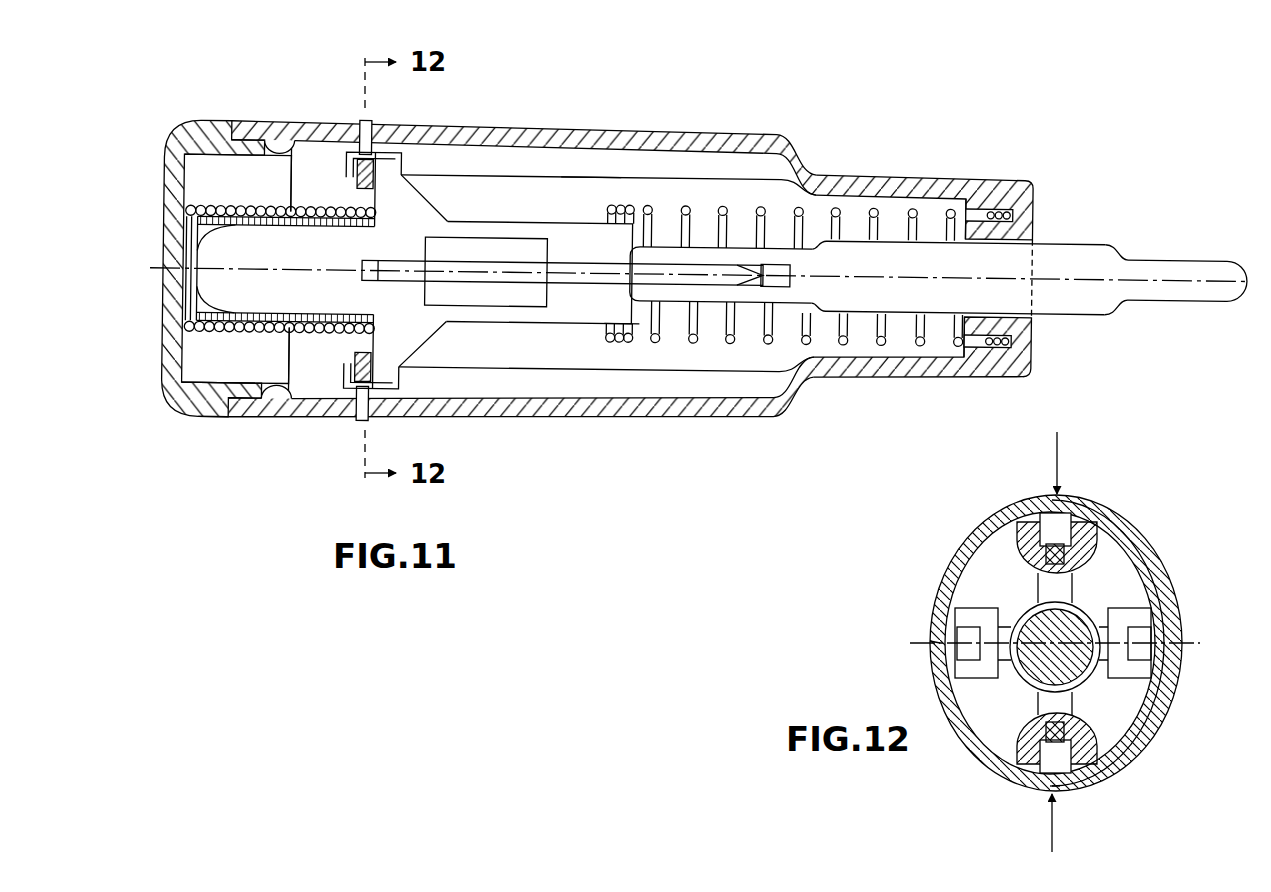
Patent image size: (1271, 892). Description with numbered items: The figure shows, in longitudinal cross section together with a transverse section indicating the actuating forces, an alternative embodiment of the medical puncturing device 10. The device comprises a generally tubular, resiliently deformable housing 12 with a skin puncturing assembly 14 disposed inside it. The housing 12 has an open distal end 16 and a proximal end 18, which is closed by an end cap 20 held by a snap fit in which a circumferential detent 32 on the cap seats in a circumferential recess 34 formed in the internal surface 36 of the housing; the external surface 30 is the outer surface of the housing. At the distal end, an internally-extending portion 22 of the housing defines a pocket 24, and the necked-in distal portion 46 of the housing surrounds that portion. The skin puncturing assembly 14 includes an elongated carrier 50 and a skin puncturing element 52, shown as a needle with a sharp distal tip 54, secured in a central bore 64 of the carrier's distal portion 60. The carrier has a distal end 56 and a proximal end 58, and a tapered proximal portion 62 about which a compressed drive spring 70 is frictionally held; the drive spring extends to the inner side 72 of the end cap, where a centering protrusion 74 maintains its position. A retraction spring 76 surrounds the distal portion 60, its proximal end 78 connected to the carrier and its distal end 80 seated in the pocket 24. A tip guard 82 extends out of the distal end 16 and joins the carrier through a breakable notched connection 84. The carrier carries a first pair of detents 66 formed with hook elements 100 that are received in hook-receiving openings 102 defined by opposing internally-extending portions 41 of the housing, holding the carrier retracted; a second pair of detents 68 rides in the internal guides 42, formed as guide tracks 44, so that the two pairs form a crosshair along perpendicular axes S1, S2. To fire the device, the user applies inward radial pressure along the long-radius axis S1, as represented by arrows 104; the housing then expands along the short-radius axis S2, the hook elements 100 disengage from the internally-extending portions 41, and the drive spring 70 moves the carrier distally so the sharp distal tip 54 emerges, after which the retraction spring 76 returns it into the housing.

In FIG. 11, the puncturing device 10 is at (252, 72).
In FIG. 11, the housing 12 is at (700, 143).
In FIG. 11, the skin puncturing assembly 14 is at (585, 186).
In FIG. 11, the distal end 16 is at (1036, 180).
In FIG. 11, the proximal end 18 is at (228, 118).
In FIG. 11, the end cap 20 is at (175, 145).
In FIG. 11, the internally-extending portion 22 is at (978, 352).
In FIG. 11, the pocket 24 is at (975, 208).
In FIG. 11, the external surface 30 is at (768, 130).
In FIG. 12, the external surface 30 is at (1163, 535).
In FIG. 11, the circumferential detent 32 is at (292, 418).
In FIG. 11, the circumferential recess 34 is at (252, 416).
In FIG. 11, the internal surface 36 is at (318, 134).
In FIG. 11, the internally-extending portions 41 is at (358, 172).
In FIG. 12, the internally-extending portions 41 is at (1090, 548).
In FIG. 12, the internal guides 42 is at (982, 603).
In FIG. 11, the guide tracks 44 is at (700, 162).
In FIG. 12, the guide tracks 44 is at (960, 628).
In FIG. 11, the distal portion 46 is at (850, 172).
In FIG. 11, the carrier 50 is at (520, 235).
In FIG. 11, the skin puncturing element 52 is at (545, 282).
In FIG. 11, the sharp distal tip 54 is at (770, 282).
In FIG. 11, the distal end 56 is at (713, 200).
In FIG. 11, the proximal end 58 is at (214, 252).
In FIG. 11, the distal portion 60 is at (580, 232).
In FIG. 11, the proximal portion 62 is at (256, 307).
In FIG. 11, the central bore 64 is at (374, 262).
In FIG. 11, the first pair of detents 66 is at (408, 175).
In FIG. 12, the first pair of detents 66 is at (1072, 590).
In FIG. 12, the second pair of detents 68 is at (1000, 660).
In FIG. 11, the drive spring 70 is at (185, 340).
In FIG. 12, the drive spring 70 is at (1040, 617).
In FIG. 11, the inner side 72 is at (190, 370).
In FIG. 11, the centering protrusion 74 is at (185, 240).
In FIG. 11, the retraction spring 76 is at (846, 345).
In FIG. 11, the proximal end 78 is at (612, 334).
In FIG. 11, the distal end 80 is at (1034, 356).
In FIG. 11, the tip guard 82 is at (1112, 310).
In FIG. 11, the notched connection 84 is at (640, 302).
In FIG. 11, the hook elements 100 is at (348, 160).
In FIG. 12, the hook elements 100 is at (1040, 535).
In FIG. 11, the hook-receiving openings 102 is at (375, 140).
In FIG. 12, the hook-receiving openings 102 is at (1050, 515).
In FIG. 12, the arrows 104 is at (1060, 448).
In FIG. 12, the transverse axis S1 is at (1058, 785).
In FIG. 12, the transverse axis S2 is at (936, 641).